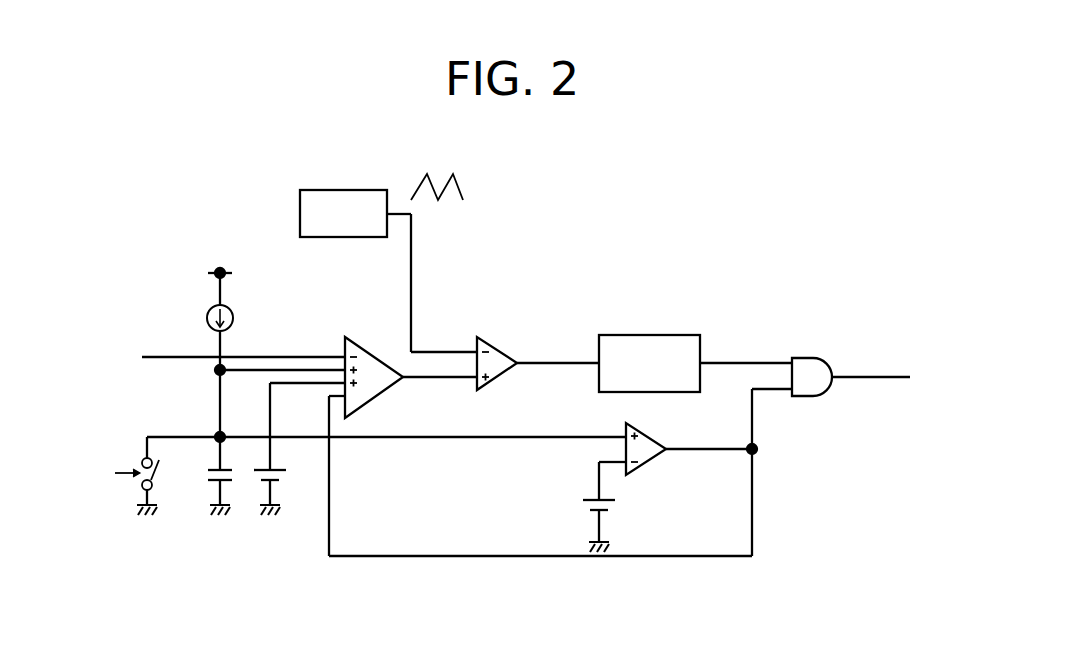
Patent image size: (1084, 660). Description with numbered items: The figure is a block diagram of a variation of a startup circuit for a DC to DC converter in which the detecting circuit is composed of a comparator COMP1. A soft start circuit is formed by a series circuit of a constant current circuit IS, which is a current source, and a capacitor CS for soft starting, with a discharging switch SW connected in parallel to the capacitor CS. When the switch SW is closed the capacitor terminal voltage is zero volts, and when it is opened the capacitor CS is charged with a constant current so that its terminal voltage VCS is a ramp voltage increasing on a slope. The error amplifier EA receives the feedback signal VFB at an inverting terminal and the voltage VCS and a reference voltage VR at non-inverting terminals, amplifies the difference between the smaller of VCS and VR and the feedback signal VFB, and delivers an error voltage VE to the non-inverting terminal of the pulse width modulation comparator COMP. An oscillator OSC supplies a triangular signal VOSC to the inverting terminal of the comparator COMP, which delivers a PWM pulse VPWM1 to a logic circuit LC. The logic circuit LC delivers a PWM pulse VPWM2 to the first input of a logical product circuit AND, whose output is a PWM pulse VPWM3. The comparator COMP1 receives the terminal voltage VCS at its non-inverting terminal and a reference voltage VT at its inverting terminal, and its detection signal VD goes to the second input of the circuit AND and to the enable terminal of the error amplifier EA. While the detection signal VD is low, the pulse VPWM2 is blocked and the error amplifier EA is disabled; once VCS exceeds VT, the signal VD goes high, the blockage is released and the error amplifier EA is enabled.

The constant current circuit IS is at (207, 318).
The feedback signal VFB is at (221, 357).
The terminal voltage of the capacitor CS VCS is at (386, 425).
The discharging switch SW is at (132, 476).
The capacitor for soft starting CS is at (202, 491).
The reference voltage VR is at (299, 449).
The error amplifier EA is at (377, 357).
The error voltage VE is at (440, 390).
The oscillator OSC is at (343, 190).
The triangular signal VOSC is at (432, 252).
The pulse width modulation comparator COMP is at (497, 343).
The PWM pulse VPWM1 is at (558, 351).
The logic circuit LC is at (648, 335).
The PWM pulse VPWM2 is at (746, 353).
The logical product circuit AND is at (810, 358).
The PWM pulse VPWM3 is at (872, 365).
The comparator COMP1 is at (645, 464).
The detection signal VD is at (711, 440).
The reference voltage VT is at (616, 507).